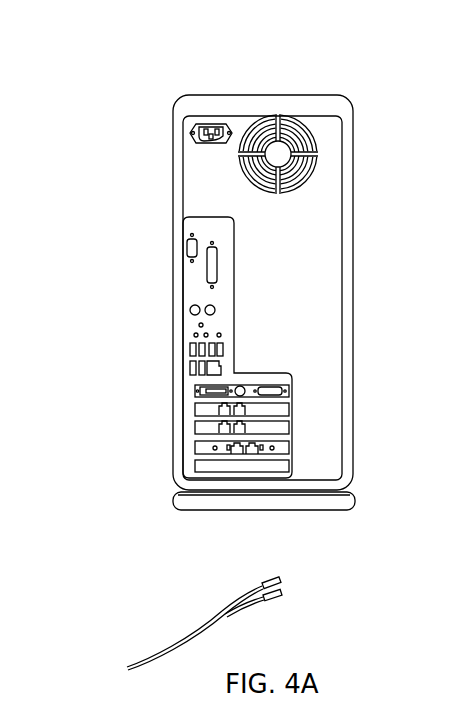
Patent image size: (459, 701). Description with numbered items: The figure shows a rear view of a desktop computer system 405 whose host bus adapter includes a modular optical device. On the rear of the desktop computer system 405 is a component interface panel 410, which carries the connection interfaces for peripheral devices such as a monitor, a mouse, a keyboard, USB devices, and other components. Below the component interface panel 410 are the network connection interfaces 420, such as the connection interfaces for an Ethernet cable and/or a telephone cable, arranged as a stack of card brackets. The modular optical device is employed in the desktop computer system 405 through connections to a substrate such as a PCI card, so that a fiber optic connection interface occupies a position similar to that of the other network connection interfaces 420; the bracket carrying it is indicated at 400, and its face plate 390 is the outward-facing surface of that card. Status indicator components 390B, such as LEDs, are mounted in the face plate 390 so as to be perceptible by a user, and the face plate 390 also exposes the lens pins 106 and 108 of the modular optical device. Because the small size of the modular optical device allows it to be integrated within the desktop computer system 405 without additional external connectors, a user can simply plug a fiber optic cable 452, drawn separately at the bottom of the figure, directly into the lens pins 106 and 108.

The desktop computer system 405 is at (146, 60).
The component interface panel 410 is at (190, 282).
The network connection interfaces 420 is at (174, 403).
The network interface card 400 is at (185, 451).
The face plate 390 is at (293, 453).
The status indicator components 390B is at (273, 445).
The lens pin 106 is at (234, 458).
The lens pin 108 is at (252, 458).
The fiber optic cable 452 is at (175, 648).